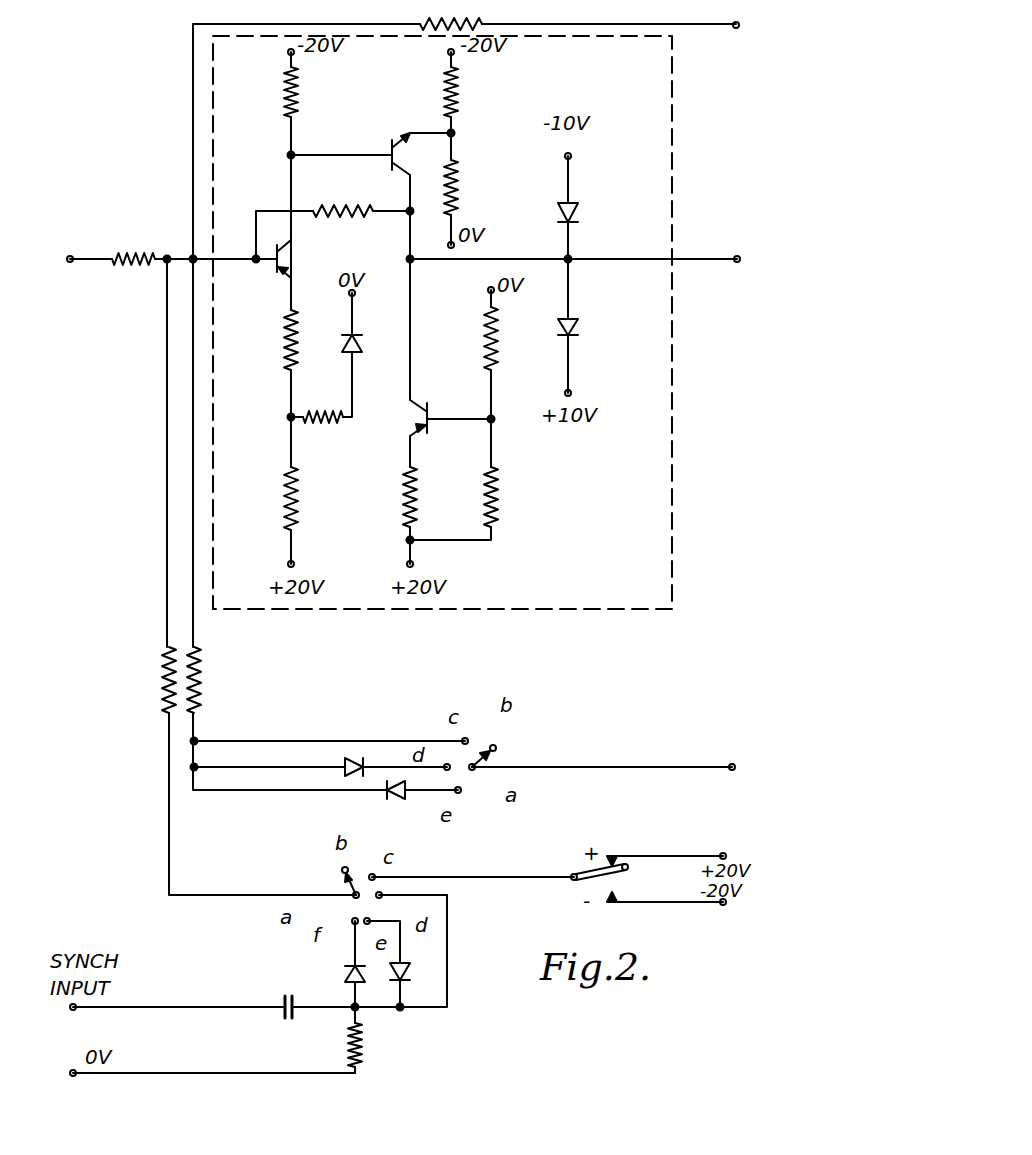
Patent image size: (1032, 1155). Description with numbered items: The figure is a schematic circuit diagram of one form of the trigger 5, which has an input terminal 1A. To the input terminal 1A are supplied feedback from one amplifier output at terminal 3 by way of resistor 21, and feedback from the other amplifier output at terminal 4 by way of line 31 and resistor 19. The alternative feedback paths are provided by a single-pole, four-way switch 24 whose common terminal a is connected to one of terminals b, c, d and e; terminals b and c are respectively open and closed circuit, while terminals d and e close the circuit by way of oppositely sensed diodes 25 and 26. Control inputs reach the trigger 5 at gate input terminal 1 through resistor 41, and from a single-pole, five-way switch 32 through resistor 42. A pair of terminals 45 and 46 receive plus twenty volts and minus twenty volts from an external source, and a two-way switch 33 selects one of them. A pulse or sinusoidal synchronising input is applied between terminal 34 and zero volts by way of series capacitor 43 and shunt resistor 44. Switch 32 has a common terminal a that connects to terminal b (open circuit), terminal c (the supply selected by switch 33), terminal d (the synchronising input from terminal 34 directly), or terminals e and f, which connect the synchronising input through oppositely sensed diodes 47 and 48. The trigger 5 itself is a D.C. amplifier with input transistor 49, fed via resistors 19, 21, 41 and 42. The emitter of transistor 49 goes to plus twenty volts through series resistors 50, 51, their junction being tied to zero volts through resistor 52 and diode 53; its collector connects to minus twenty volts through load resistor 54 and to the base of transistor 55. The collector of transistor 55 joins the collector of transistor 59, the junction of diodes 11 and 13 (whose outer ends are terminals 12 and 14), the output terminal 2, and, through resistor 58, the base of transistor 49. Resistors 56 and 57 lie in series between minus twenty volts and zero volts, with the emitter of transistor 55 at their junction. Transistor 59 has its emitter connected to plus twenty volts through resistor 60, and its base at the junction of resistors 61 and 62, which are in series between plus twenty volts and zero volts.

The gate input terminal 1 is at (71, 252).
The input terminal 1A is at (270, 261).
The output terminal 2 is at (737, 252).
The terminal 3 is at (736, 32).
The terminal 4 is at (732, 760).
The trigger 5 is at (650, 66).
The diode 11 is at (576, 325).
The +10V terminal 12 is at (572, 391).
The diode 13 is at (576, 210).
The -10V terminal 14 is at (572, 155).
The resistor 19 is at (201, 672).
The resistor 21 is at (432, 30).
The single-pole, 4-way switch 24 is at (474, 772).
The diode 25 is at (345, 763).
The diode 26 is at (396, 798).
The line 31 is at (694, 766).
The single-pole, 5-way switch 32 is at (352, 897).
The 2-way switch 33 is at (620, 872).
The terminal 34 is at (72, 1013).
The resistor 41 is at (136, 252).
The resistor 42 is at (162, 666).
The series capacitor 43 is at (280, 1000).
The shunt resistor 44 is at (362, 1046).
The terminal 45 is at (723, 850).
The terminal 46 is at (721, 908).
The diode 47 is at (410, 972).
The diode 48 is at (345, 975).
The transistor 49 is at (286, 260).
The resistor 50 is at (284, 338).
The resistor 51 is at (298, 507).
The resistor 52 is at (323, 424).
The diode 53 is at (360, 342).
The load resistor 54 is at (308, 94).
The transistor 55 is at (386, 150).
The resistor 56 is at (458, 97).
The resistor 57 is at (458, 183).
The resistor 58 is at (352, 196).
The transistor 59 is at (428, 406).
The resistor 60 is at (403, 505).
The resistor 61 is at (498, 510).
The resistor 62 is at (498, 346).